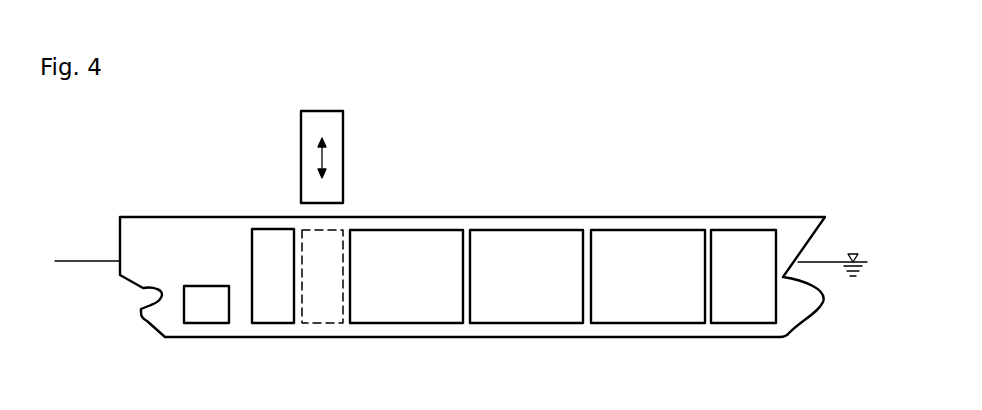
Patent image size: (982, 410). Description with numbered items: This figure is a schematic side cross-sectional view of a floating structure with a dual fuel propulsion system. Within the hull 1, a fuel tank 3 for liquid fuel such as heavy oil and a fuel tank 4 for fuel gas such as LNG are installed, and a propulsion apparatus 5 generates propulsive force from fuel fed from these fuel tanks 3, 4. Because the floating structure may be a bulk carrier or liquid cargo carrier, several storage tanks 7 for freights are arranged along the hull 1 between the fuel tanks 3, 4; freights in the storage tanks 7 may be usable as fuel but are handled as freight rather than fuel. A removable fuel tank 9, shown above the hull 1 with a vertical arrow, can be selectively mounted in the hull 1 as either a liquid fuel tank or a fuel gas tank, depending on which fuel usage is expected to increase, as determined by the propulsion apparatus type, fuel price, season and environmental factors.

The hull 1 is at (523, 336).
The fuel tank for liquid fuel 3 is at (268, 323).
The fuel tank for fuel gas 4 is at (742, 323).
The propulsion apparatus 5 is at (203, 323).
The storage tank 7 is at (405, 228).
The removable fuel tank 9 is at (343, 125).